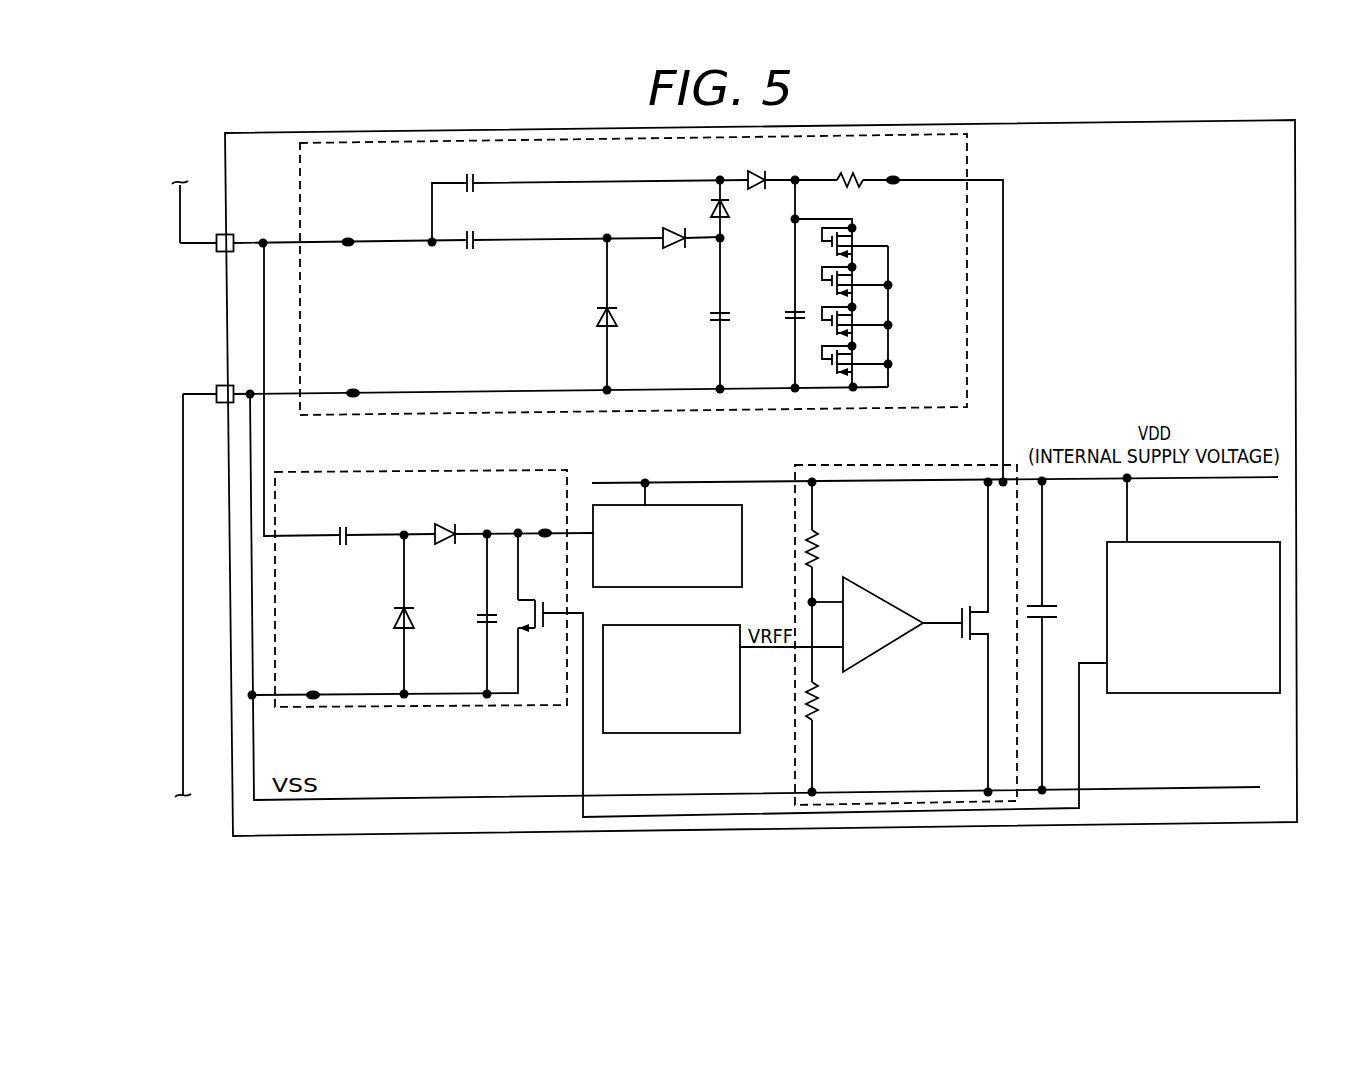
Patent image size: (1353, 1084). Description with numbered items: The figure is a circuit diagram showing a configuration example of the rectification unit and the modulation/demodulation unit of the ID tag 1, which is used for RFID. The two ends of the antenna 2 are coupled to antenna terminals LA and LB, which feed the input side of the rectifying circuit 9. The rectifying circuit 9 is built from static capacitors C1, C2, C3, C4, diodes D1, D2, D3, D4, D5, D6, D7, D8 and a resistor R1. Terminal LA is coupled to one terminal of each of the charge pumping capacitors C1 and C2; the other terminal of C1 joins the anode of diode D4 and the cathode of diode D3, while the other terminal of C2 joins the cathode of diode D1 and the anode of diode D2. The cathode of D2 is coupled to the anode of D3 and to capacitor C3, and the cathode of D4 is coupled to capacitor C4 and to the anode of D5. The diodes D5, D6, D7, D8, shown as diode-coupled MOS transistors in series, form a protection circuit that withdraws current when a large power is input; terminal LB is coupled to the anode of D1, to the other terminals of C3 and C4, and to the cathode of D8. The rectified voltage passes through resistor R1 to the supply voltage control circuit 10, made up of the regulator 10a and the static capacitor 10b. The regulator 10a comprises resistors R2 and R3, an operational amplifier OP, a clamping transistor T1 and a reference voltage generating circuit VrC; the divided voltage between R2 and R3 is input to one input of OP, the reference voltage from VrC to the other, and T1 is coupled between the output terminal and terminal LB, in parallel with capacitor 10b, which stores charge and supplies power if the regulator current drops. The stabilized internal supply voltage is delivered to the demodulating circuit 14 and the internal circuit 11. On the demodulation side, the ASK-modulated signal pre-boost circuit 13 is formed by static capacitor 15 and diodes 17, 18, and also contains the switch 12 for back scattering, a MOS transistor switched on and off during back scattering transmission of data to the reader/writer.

The ID tag 1 is at (347, 850).
The antenna 2 is at (184, 598).
The rectifying circuit 9 is at (968, 158).
The supply voltage control circuit 10 is at (484, 626).
The regulator 10a is at (953, 465).
The static capacitor 10b is at (1050, 605).
The internal circuit 11 is at (1208, 540).
The switch for back scattering 12 is at (522, 600).
The ASK-modulated signal pre-boost circuit 13 is at (547, 470).
The demodulating circuit 14 is at (710, 504).
The static capacitor 15 is at (343, 548).
The diode 17 is at (396, 618).
The diode 18 is at (446, 546).
The static capacitor C1 is at (476, 190).
The static capacitor C2 is at (476, 247).
The static capacitor C3 is at (714, 322).
The static capacitor C4 is at (788, 320).
The diode D1 is at (596, 316).
The diode D2 is at (676, 250).
The diode D3 is at (710, 208).
The diode D4 is at (757, 190).
The diode D5 is at (856, 239).
The diode D6 is at (856, 278).
The diode D7 is at (856, 317).
The diode D8 is at (856, 356).
The resistor R1 is at (855, 173).
The resistor R2 is at (822, 538).
The resistor R3 is at (822, 713).
The operational amplifier OP is at (880, 593).
The transistor T1 is at (978, 640).
The reference voltage generating circuit VrC is at (648, 735).